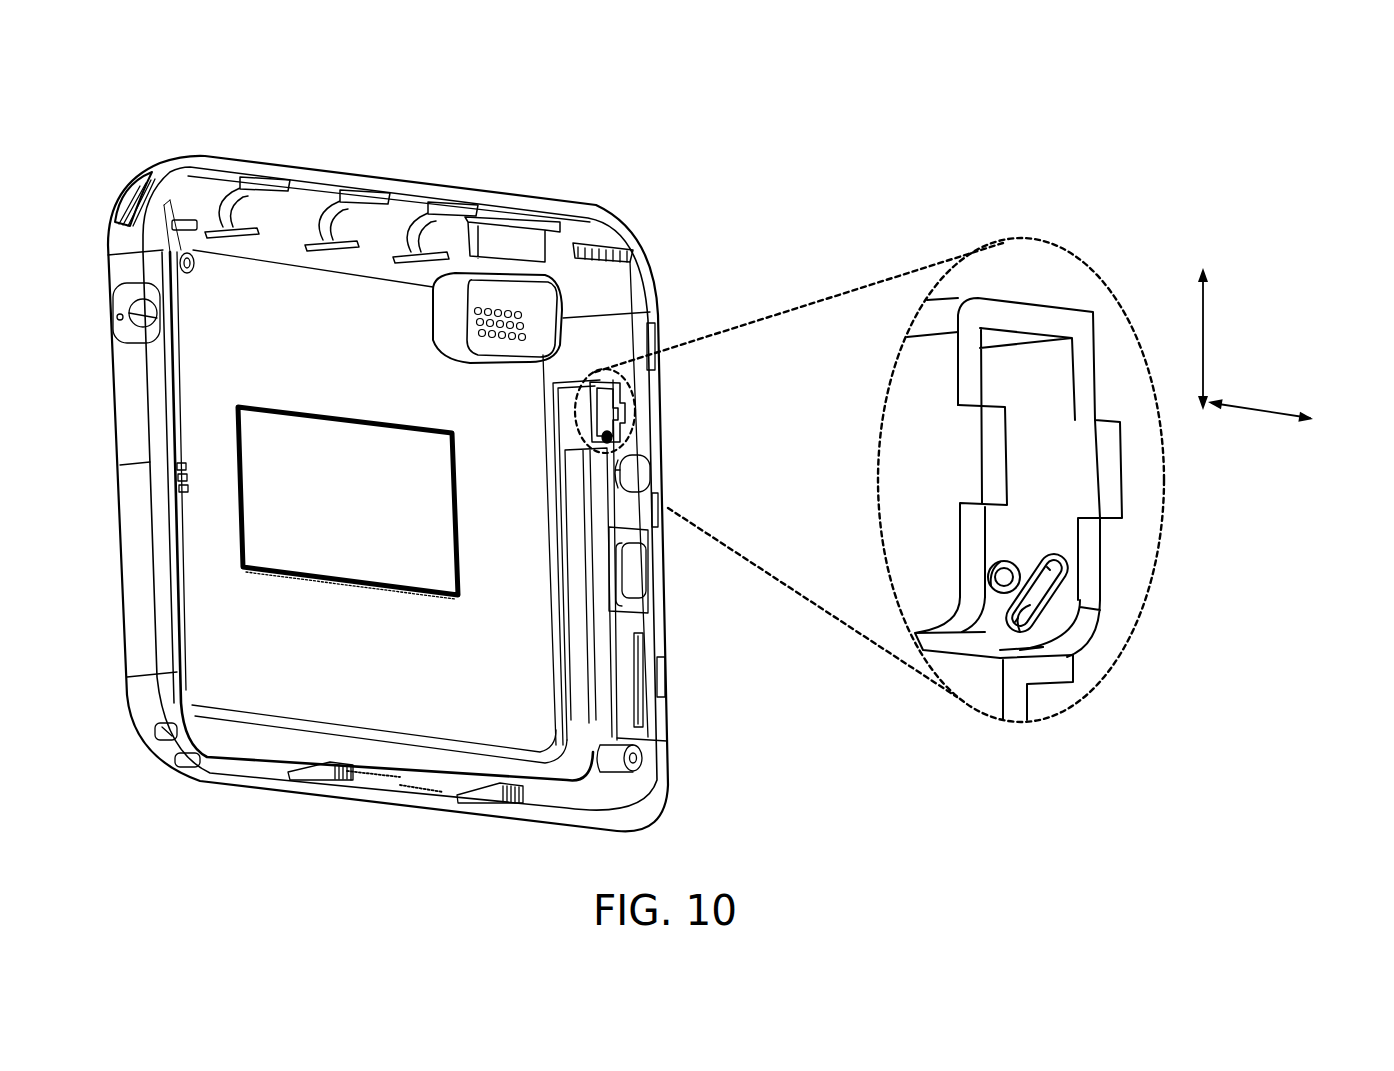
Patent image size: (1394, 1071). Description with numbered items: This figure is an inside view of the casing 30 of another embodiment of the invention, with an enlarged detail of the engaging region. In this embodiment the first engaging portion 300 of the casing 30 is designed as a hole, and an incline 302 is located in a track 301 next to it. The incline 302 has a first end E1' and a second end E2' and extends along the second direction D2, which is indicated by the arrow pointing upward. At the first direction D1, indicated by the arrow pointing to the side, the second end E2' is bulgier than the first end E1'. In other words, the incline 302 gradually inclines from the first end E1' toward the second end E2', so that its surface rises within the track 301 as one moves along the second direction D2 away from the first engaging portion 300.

The casing 30 is at (472, 122).
The first engaging portion 300 is at (1005, 562).
The track 301 is at (1062, 590).
The incline 302 is at (1043, 600).
The first end E1' is at (1143, 518).
The second end E2' is at (941, 685).
The first direction D1 is at (1284, 417).
The second direction D2 is at (1200, 321).